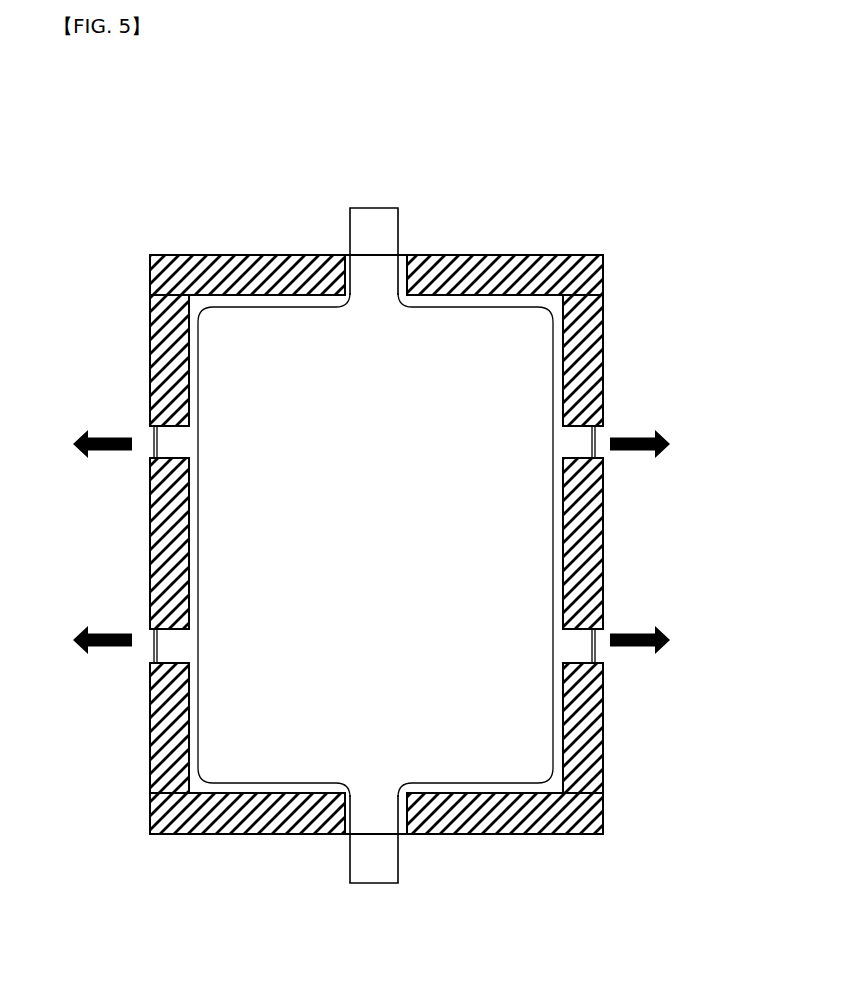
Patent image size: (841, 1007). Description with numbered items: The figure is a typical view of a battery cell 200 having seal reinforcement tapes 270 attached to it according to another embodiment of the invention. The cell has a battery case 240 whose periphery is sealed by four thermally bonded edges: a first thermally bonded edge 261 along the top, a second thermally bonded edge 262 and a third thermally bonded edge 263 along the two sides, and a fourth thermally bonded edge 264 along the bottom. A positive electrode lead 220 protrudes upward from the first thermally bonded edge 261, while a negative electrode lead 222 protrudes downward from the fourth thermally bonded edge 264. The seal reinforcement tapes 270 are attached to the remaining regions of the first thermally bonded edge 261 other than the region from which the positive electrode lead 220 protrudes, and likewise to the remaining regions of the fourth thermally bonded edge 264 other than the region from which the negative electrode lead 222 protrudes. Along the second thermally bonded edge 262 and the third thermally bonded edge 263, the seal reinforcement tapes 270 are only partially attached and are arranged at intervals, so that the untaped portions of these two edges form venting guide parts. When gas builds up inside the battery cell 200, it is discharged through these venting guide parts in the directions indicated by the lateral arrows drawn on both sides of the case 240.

The battery cell 200 is at (118, 136).
The positive electrode lead 220 is at (352, 207).
The negative electrode lead 222 is at (352, 885).
The battery case 240 is at (386, 536).
The first thermally bonded edge 261 is at (227, 305).
The second thermally bonded edge 262 is at (167, 652).
The third thermally bonded edge 263 is at (587, 650).
The fourth thermally bonded edge 264 is at (262, 788).
The seal reinforcement tape 270 is at (265, 278).